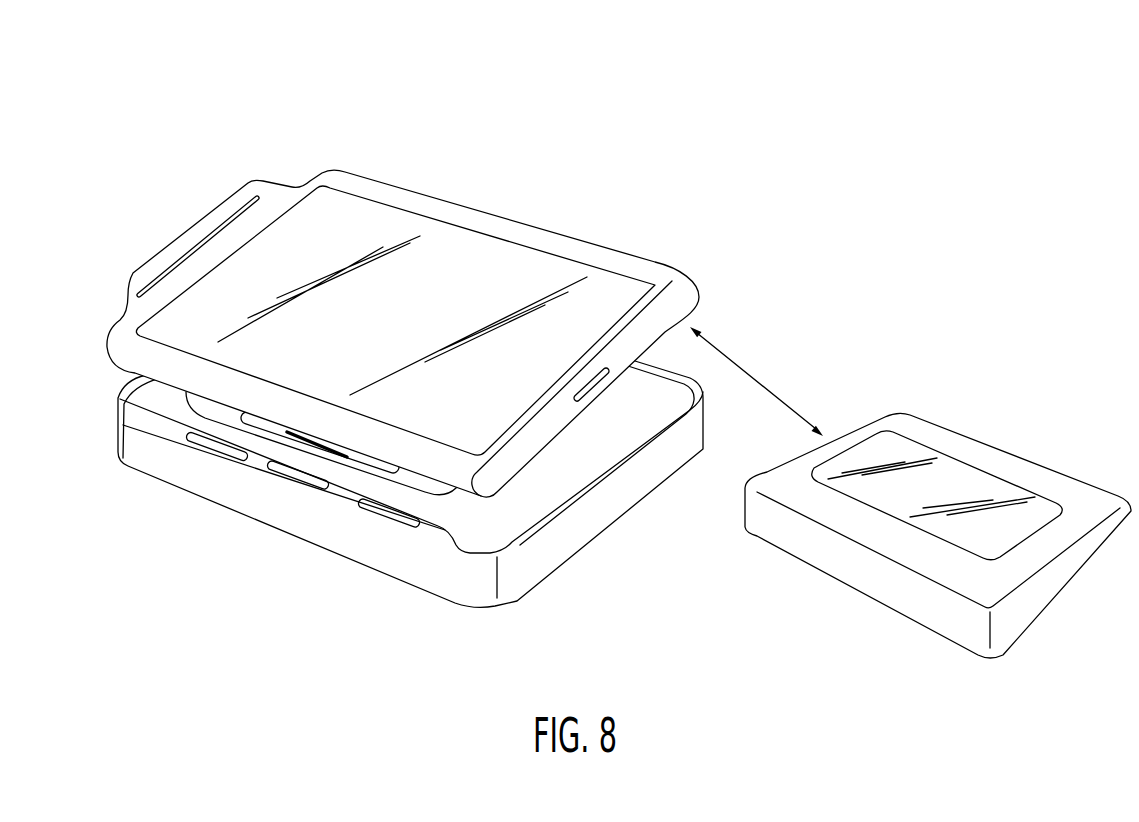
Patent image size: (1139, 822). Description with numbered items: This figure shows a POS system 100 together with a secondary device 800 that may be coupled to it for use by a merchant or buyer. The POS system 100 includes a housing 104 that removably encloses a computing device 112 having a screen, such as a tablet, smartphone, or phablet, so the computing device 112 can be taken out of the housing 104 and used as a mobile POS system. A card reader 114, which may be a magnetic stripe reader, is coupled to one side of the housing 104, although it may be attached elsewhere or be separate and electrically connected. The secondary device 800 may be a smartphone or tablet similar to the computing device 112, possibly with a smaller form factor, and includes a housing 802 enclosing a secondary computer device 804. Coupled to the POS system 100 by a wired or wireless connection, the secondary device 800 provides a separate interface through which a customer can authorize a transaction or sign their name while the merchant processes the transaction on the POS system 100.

The POS system 100 is at (159, 106).
The housing 104 is at (172, 375).
The computing device 112 is at (478, 257).
The card reader 114 is at (180, 235).
The secondary device 800 is at (1031, 371).
The housing 802 is at (843, 567).
The secondary computer device 804 is at (863, 453).